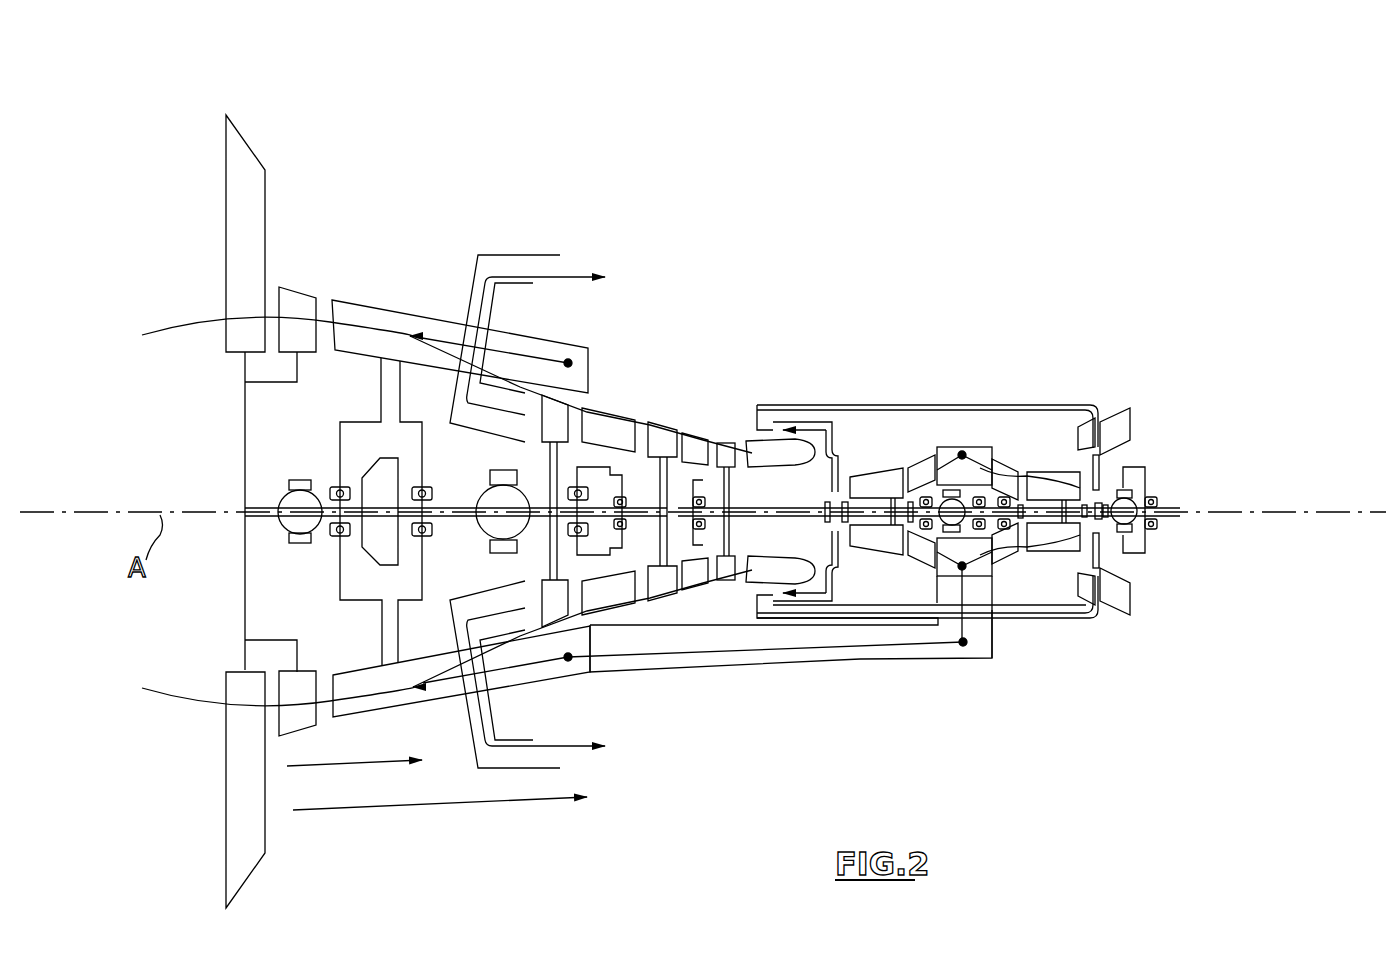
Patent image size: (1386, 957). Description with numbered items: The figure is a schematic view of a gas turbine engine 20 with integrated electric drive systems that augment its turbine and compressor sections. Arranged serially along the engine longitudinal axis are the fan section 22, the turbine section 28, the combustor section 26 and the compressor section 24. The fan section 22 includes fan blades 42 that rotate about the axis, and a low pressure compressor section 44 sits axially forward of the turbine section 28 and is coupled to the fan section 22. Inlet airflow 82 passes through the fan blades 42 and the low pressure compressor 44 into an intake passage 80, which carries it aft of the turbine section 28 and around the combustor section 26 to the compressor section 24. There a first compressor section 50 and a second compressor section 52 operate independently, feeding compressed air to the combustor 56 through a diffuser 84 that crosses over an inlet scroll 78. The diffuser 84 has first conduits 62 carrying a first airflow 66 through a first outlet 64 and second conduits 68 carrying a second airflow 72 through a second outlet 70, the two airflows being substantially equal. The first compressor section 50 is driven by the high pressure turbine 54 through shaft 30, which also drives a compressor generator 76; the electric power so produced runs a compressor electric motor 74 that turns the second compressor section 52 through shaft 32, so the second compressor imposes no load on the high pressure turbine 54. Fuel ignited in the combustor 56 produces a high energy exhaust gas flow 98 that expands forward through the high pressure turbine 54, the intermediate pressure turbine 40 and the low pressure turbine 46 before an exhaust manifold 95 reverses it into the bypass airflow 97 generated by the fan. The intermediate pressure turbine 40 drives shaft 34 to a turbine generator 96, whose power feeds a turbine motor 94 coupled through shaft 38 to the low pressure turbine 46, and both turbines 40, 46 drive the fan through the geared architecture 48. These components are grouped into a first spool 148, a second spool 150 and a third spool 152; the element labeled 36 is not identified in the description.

The gas turbine engine 20 is at (935, 213).
The fan section 22 is at (264, 462).
The compressor section 24 is at (830, 312).
The combustor section 26 is at (730, 312).
The turbine section 28 is at (542, 312).
The shaft 30 is at (753, 522).
The shaft 32 is at (1092, 565).
The shaft 34 is at (668, 592).
The compressor stator vanes 36 is at (600, 412).
The shaft 38 is at (450, 478).
The intermediate pressure turbine 40 is at (660, 593).
The fan blades 42 is at (243, 200).
The low pressure compressor section 44 is at (300, 285).
The low pressure turbine 46 is at (572, 622).
The geared architecture 48 is at (388, 455).
The first compressor section 50 is at (877, 580).
The second compressor section 52 is at (1040, 580).
The high pressure turbine 54 is at (727, 595).
The combustor 56 is at (760, 430).
The first conduits 62 is at (837, 423).
The first outlet 64 is at (823, 478).
The first airflow 66 is at (812, 420).
The second conduits 68 is at (1053, 408).
The second outlet 70 is at (1103, 471).
The second airflow 72 is at (1000, 405).
The compressor electric motor 74 is at (1147, 525).
The compressor generator 76 is at (930, 560).
The inlet scroll 78 is at (957, 652).
The intake passage 80 is at (532, 673).
The inlet airflow 82 is at (362, 697).
The diffuser 84 is at (770, 625).
The turbine motor 94 is at (492, 530).
The exhaust manifold 95 is at (472, 760).
The turbine generator 96 is at (298, 535).
The bypass airflow 97 is at (455, 802).
The high energy exhaust gas flow 98 is at (628, 600).
The first spool 148 is at (822, 525).
The second spool 150 is at (636, 455).
The third spool 152 is at (541, 530).